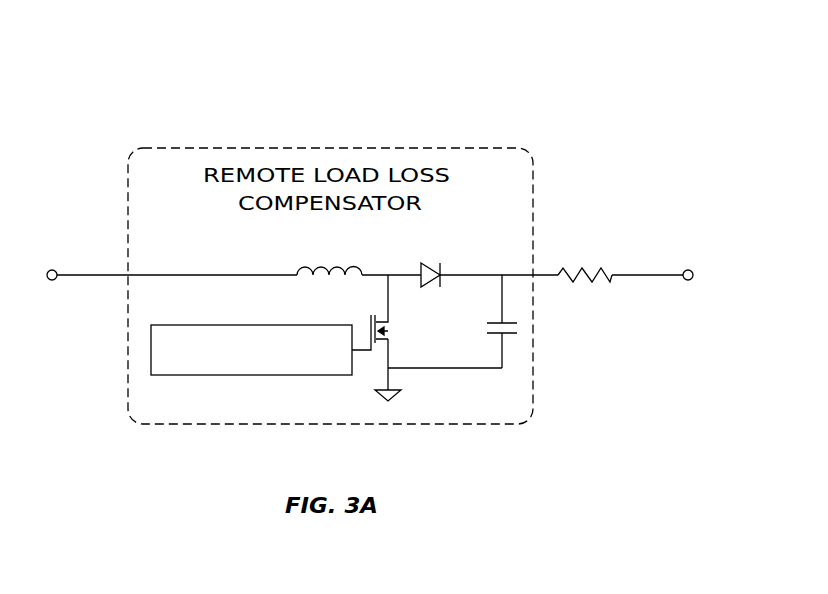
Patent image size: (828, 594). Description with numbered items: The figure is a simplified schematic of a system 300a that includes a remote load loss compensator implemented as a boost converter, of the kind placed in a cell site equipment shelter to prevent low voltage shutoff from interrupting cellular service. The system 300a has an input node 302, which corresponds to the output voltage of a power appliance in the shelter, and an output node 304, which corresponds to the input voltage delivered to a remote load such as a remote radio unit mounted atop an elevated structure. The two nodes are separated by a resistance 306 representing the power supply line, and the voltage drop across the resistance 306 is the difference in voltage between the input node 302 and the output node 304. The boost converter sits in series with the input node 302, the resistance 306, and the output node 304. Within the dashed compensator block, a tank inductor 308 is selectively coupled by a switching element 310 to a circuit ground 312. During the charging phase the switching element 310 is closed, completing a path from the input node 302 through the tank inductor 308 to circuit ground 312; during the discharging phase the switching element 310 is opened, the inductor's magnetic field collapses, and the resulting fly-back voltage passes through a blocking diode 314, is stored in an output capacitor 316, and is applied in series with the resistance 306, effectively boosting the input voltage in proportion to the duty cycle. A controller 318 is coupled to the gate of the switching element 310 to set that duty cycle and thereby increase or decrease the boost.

The system 300a is at (127, 58).
The input node 302 is at (52, 281).
The output node 304 is at (688, 281).
The resistance 306 is at (585, 268).
The tank inductor 308 is at (303, 267).
The switching element 310 is at (390, 337).
The circuit ground 312 is at (388, 403).
The blocking diode 314 is at (434, 263).
The capacitor 316 is at (502, 370).
The controller 318 is at (151, 349).